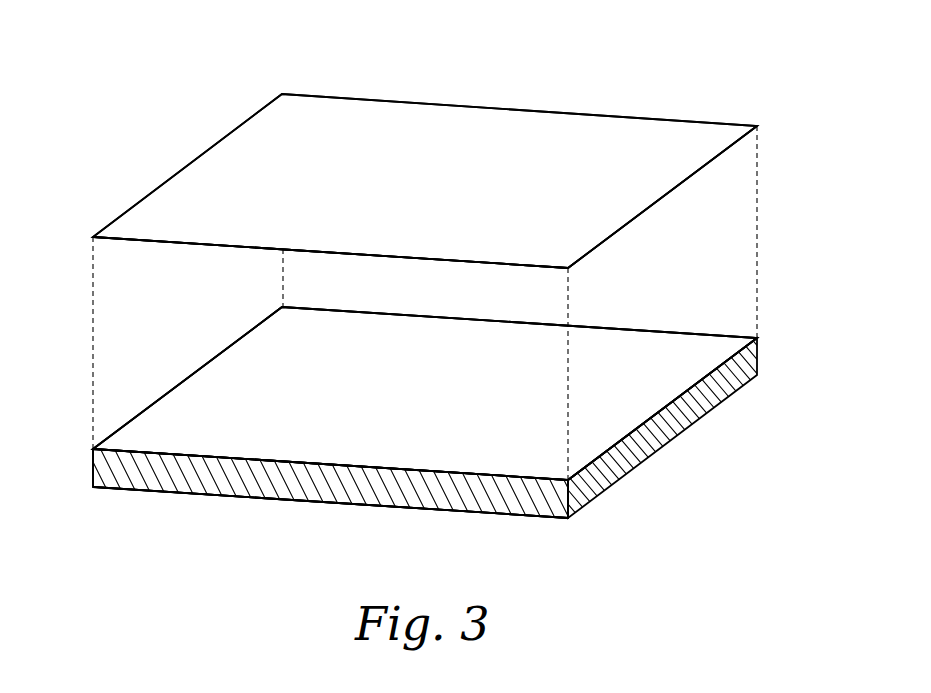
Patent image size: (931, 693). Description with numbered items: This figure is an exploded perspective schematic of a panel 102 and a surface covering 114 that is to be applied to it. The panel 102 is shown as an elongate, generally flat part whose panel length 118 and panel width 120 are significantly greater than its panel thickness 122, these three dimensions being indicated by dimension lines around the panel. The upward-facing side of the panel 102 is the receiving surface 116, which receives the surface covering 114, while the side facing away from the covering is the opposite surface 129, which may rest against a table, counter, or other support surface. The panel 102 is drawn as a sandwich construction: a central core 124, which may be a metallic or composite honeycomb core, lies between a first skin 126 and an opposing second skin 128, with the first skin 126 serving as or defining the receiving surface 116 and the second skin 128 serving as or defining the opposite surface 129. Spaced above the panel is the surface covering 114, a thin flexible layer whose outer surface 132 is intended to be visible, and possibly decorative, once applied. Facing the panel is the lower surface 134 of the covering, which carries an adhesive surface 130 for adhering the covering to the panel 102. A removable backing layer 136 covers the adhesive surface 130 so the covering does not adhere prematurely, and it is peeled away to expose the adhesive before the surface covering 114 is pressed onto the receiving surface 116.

The panel 102 is at (127, 441).
The surface covering 114 is at (510, 108).
The receiving surface 116 is at (527, 404).
The panel length 118 is at (283, 290).
The panel width 120 is at (577, 525).
The panel thickness 122 is at (768, 340).
The central core 124 is at (130, 478).
The first skin 126 is at (334, 396).
The second skin 128 is at (368, 512).
The opposite surface 129 is at (289, 508).
The adhesive surface 130 is at (112, 243).
The outer surface 132 is at (389, 123).
The lower surface 134 is at (650, 218).
The backing layer 136 is at (172, 248).